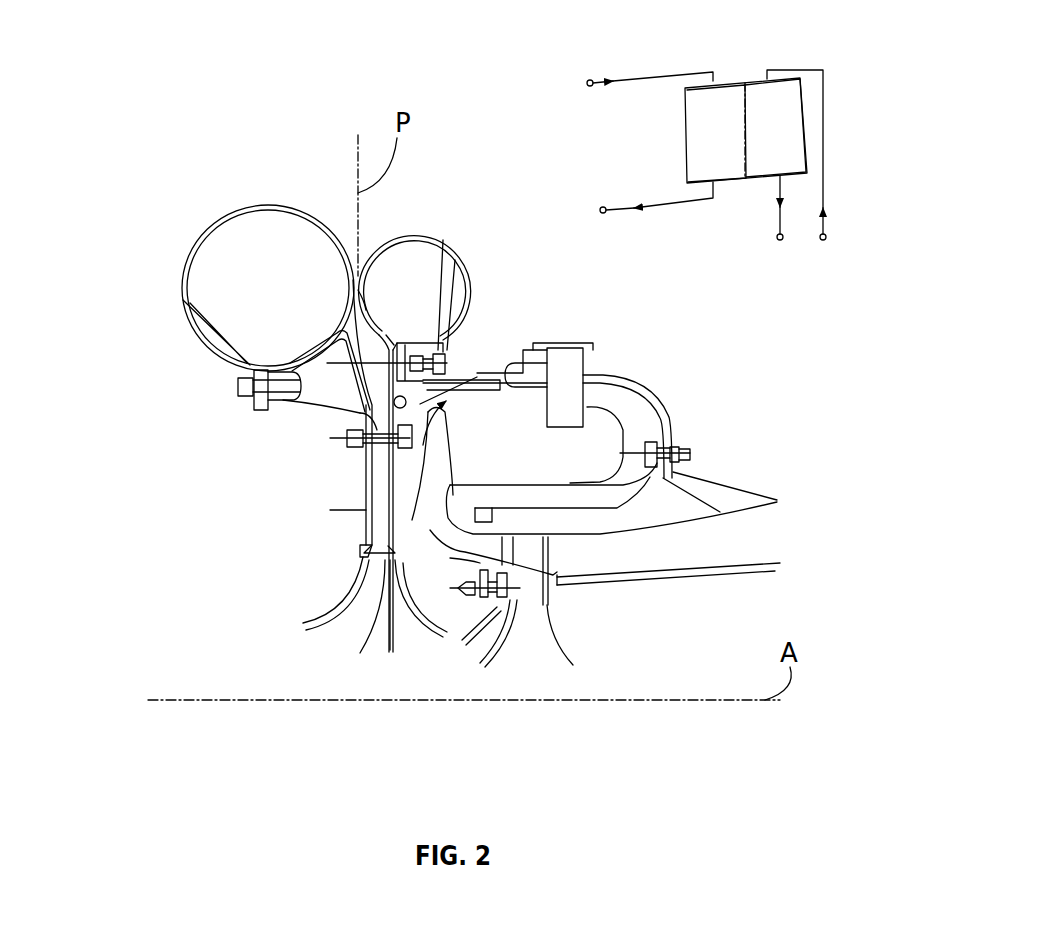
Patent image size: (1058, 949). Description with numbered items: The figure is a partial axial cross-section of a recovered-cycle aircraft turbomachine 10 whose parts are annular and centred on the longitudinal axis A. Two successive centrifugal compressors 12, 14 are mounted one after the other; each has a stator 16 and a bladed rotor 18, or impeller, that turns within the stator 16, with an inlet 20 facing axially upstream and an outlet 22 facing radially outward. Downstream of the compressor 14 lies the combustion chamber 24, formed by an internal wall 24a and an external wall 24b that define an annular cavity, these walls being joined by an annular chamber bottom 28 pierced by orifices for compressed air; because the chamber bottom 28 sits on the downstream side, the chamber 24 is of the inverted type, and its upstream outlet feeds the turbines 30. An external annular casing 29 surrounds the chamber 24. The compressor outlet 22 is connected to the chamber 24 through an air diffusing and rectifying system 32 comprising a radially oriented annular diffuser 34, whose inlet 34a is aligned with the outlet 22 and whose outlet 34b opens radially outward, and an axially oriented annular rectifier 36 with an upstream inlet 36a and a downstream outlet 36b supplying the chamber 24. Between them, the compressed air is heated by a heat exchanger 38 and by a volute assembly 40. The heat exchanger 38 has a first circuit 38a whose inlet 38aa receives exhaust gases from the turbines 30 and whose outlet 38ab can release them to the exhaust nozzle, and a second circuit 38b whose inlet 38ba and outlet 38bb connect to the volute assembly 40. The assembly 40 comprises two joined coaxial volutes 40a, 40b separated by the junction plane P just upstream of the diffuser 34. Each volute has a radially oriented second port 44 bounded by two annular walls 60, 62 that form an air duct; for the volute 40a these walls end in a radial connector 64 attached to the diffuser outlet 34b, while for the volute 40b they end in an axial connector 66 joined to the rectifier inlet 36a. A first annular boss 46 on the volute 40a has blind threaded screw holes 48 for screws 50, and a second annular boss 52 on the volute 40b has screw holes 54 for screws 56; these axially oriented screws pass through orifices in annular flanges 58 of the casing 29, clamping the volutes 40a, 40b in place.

The aircraft turbomachine 10 is at (138, 335).
The compressor 12 is at (272, 572).
The compressor 14 is at (270, 570).
The stator 16 is at (347, 596).
The bladed rotor 18 is at (382, 647).
The inlet 20 is at (290, 662).
The outlet 22 is at (368, 543).
The combustion chamber 24 is at (594, 451).
The internal annular wall 24a is at (573, 483).
The external annular wall 24b is at (505, 406).
The chamber bottom 28 is at (683, 472).
The external annular casing 29 is at (585, 348).
The turbine 30 is at (678, 591).
The air diffusing and rectifying system 32 is at (398, 505).
The annular diffuser 34 is at (419, 549).
The inlet 34a is at (493, 614).
The outlet 34b is at (362, 427).
The annular rectifier 36 is at (547, 394).
The inlet 36a is at (474, 378).
The outlet 36b is at (601, 372).
The heat exchanger 38 is at (743, 50).
The first circuit 38a is at (775, 128).
The second circuit 38b is at (716, 133).
The inlet 38aa is at (825, 240).
The outlet 38ab is at (781, 240).
The inlet 38ba is at (591, 79).
The outlet 38bb is at (604, 213).
The volute assembly 40 is at (318, 256).
The volute 40a is at (205, 232).
The volute 40b is at (420, 237).
The second port 44 is at (397, 338).
The first annular boss 46 is at (283, 370).
The screw hole 48 is at (258, 369).
The screw 50 is at (237, 387).
The second annular boss 52 is at (443, 240).
The screw hole 54 is at (456, 262).
The screw 56 is at (440, 368).
The annular flange 58 is at (183, 302).
The annular wall 60 is at (412, 352).
The annular wall 62 is at (360, 307).
The connector 64 is at (360, 413).
The connector 66 is at (404, 451).